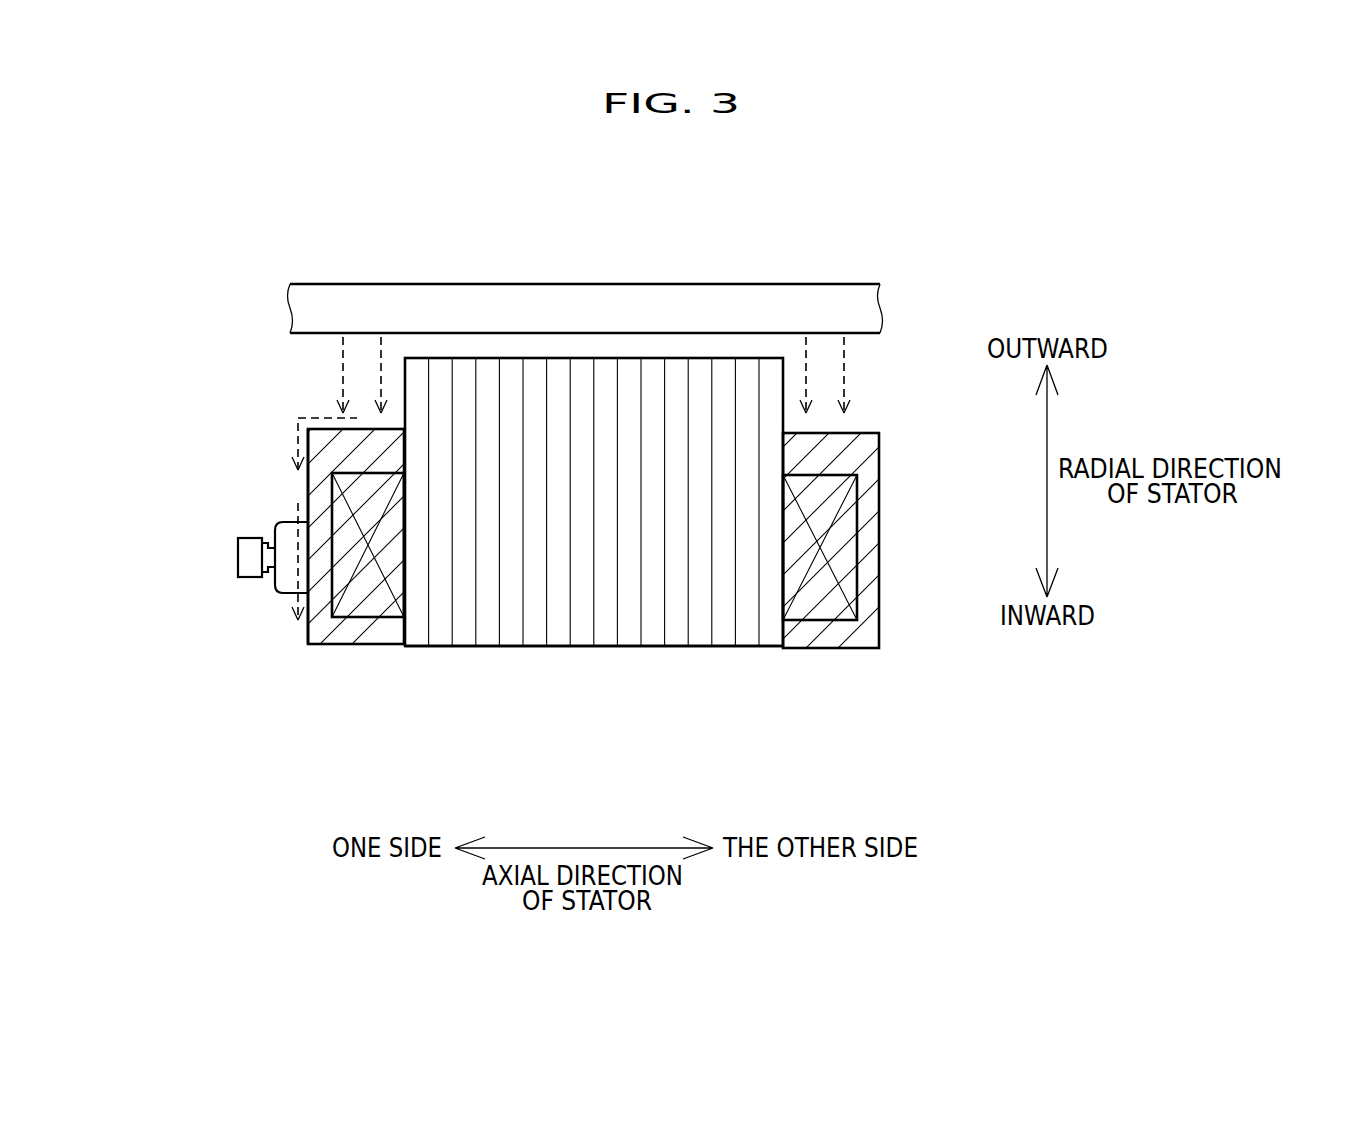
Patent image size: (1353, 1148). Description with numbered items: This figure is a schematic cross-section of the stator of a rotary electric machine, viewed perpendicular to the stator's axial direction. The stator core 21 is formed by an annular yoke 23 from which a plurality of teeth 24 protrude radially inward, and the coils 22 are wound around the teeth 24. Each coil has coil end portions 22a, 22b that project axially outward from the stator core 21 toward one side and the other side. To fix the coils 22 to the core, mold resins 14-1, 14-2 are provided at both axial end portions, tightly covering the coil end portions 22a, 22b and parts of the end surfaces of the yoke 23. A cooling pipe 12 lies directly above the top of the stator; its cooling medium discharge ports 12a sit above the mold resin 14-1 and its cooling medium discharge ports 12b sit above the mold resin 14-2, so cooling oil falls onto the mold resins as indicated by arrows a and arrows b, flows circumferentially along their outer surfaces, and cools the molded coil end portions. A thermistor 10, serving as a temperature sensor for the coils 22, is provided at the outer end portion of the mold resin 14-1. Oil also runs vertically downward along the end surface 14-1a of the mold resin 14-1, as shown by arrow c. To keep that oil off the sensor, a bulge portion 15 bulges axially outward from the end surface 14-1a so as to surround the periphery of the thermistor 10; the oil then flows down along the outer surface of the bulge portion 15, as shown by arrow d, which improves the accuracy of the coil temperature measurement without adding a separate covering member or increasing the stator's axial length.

The thermistor 10 is at (250, 557).
The cooling pipe 12 is at (492, 303).
The cooling medium discharge ports 12a is at (343, 337).
The cooling medium discharge ports 12b is at (806, 338).
The mold resin 14-1 is at (359, 570).
The one end surface of the mold resin 14-1a is at (308, 493).
The mold resin 14-2 is at (848, 637).
The bulge portion 15 is at (283, 585).
The stator core 21 is at (594, 479).
The coils 22 is at (596, 609).
The coil end portion 22a is at (372, 608).
The coil end portion 22b is at (808, 608).
The yoke 23 is at (580, 367).
The teeth 24 is at (537, 633).
The arrows a is at (338, 375).
The arrows b is at (844, 369).
The arrow c is at (298, 447).
The arrow d is at (297, 537).